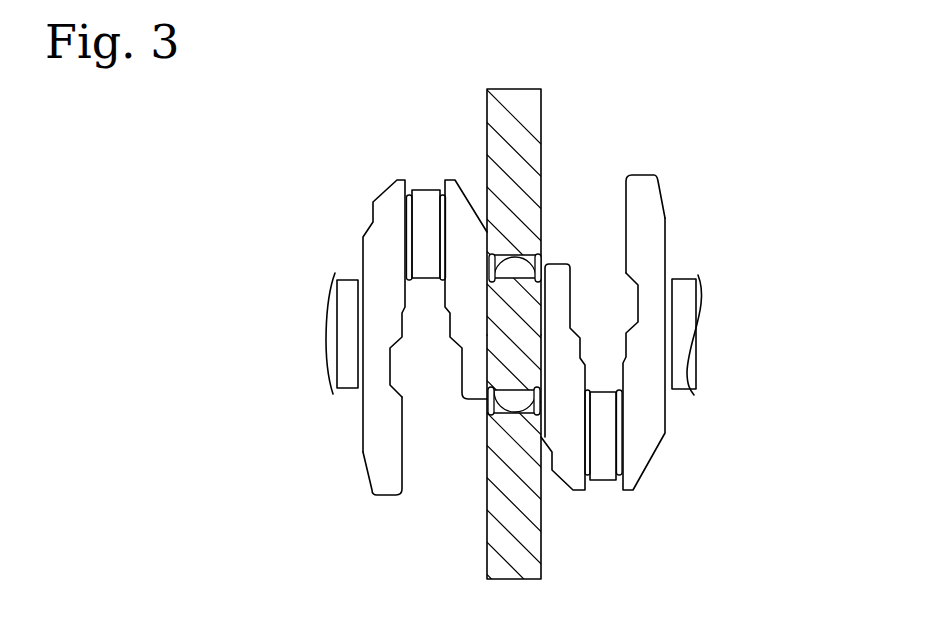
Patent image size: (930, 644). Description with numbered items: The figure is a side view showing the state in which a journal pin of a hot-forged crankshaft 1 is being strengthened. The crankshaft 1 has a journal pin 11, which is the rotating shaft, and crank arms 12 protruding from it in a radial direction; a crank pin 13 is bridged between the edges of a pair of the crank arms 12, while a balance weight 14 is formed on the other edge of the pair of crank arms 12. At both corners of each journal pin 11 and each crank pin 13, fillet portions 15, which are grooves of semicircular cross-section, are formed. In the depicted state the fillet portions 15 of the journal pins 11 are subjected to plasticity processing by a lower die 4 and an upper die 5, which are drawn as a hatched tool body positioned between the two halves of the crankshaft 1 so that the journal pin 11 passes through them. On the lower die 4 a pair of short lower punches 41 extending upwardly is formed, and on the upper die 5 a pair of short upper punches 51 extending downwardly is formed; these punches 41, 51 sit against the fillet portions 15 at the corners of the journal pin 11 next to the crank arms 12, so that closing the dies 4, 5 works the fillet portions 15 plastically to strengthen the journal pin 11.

The crankshaft 1 is at (745, 229).
The lower die 4 is at (487, 497).
The upper die 5 is at (543, 152).
The journal pin 11 is at (340, 279).
The crank arm 12 is at (517, 369).
The crank pin 13 is at (427, 275).
The balance weight 14 is at (389, 478).
The fillet portion 15 is at (444, 196).
The lower punch 41 is at (530, 409).
The upper punch 51 is at (497, 261).